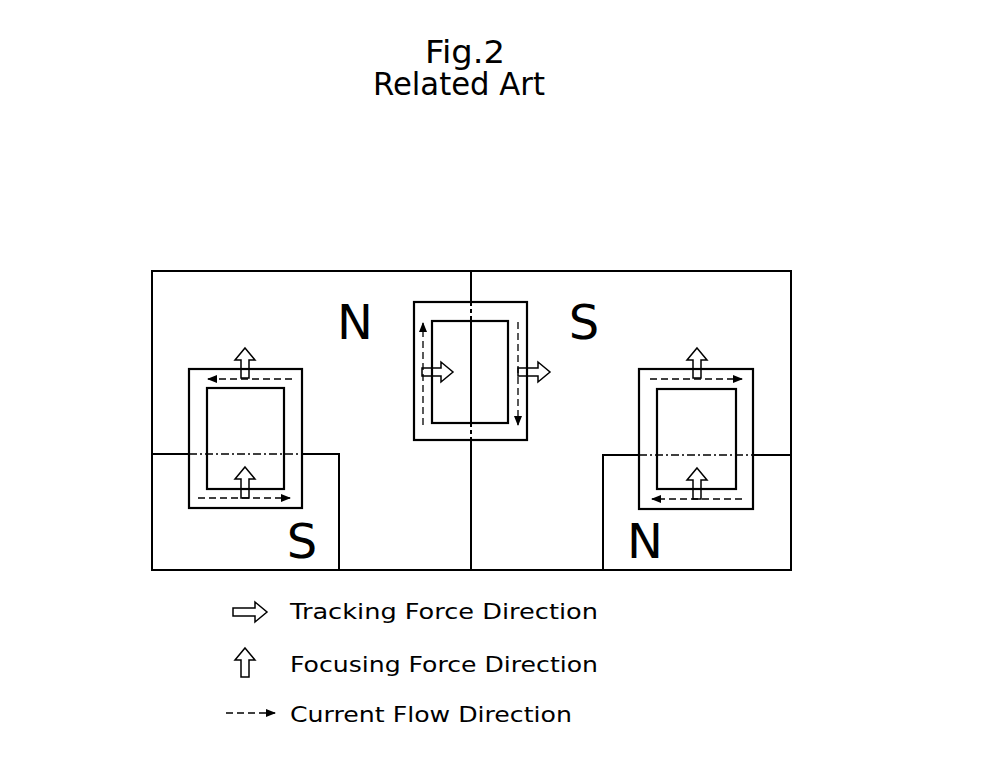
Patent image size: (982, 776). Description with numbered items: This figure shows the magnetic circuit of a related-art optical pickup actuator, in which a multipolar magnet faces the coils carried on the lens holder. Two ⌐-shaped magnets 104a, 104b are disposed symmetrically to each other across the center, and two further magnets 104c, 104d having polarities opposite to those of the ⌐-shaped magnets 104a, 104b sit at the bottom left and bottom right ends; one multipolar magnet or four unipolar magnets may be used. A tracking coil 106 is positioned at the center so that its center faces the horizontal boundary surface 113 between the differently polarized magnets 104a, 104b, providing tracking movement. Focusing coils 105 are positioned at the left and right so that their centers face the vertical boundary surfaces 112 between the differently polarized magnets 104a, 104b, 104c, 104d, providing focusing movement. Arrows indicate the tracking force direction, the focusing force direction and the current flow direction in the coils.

The ⌐-shaped magnet 104a is at (266, 290).
The ⌐-shaped magnet 104b is at (684, 290).
The magnet 104c is at (165, 525).
The magnet 104d is at (766, 529).
The focusing coil 105 is at (198, 430).
The tracking coil 106 is at (512, 310).
The vertical boundary surface 112 is at (152, 455).
The horizontal boundary surface 113 is at (469, 287).